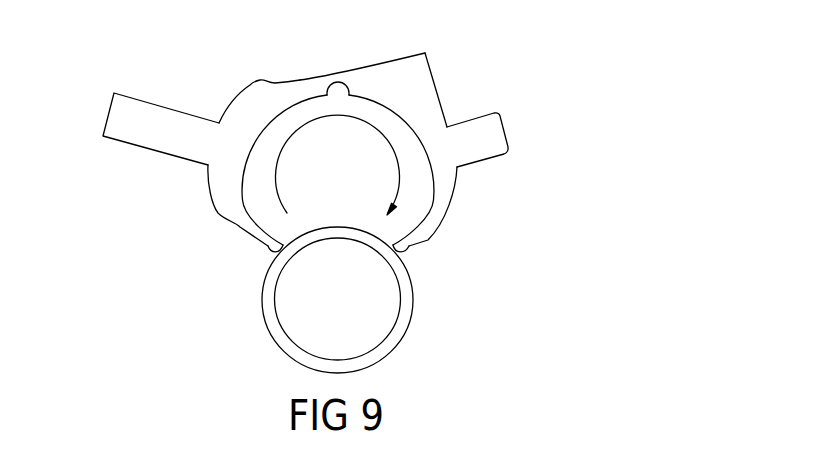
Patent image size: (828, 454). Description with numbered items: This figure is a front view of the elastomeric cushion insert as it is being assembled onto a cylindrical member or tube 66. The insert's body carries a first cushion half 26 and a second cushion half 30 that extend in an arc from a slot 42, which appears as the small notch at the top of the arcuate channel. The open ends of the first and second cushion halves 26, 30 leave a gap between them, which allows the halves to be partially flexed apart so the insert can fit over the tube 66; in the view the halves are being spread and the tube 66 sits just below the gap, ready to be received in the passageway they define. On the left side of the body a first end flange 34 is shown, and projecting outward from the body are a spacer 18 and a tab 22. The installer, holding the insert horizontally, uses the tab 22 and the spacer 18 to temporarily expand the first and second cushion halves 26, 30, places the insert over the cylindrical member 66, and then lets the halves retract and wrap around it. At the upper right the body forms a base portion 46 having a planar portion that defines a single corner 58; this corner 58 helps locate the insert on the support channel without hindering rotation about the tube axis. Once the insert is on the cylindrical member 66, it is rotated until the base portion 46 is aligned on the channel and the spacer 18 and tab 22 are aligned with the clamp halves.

The spacer 18 is at (122, 118).
The tab 22 is at (486, 145).
The first cushion half 26 is at (268, 248).
The second cushion half 30 is at (413, 238).
The first end flange 34 is at (226, 204).
The slot 42 is at (337, 86).
The base portion 46 is at (420, 90).
The corner 58 is at (425, 53).
The cylindrical member 66 is at (411, 301).